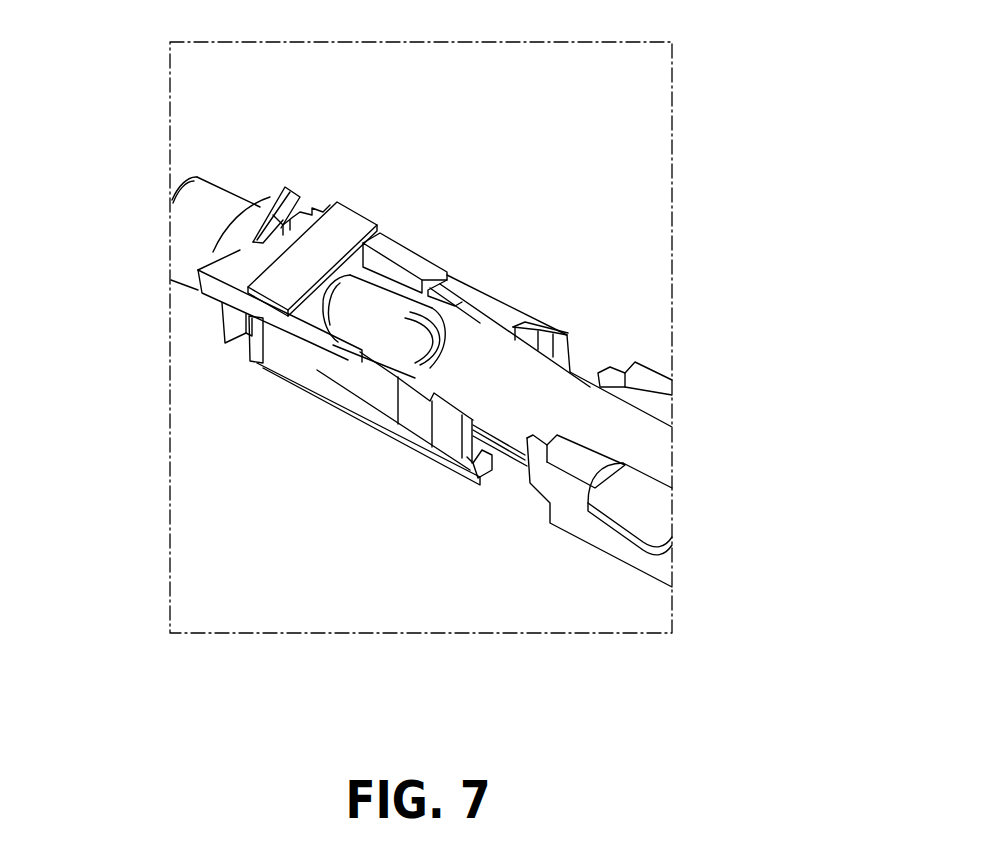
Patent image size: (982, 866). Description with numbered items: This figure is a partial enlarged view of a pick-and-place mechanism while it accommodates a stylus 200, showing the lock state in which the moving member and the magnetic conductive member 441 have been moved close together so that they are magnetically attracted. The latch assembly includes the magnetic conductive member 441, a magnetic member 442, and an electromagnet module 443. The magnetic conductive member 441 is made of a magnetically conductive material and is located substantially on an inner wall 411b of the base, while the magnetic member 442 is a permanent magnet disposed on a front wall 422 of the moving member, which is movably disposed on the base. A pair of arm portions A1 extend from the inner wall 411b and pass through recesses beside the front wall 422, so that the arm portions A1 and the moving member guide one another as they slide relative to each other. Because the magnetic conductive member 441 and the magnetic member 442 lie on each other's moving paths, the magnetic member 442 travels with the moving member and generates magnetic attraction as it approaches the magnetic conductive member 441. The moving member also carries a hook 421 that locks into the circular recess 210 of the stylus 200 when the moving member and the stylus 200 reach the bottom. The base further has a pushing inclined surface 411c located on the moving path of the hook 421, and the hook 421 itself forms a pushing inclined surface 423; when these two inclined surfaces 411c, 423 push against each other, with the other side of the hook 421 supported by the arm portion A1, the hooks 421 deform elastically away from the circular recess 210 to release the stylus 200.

The stylus 200 is at (647, 450).
The circular recess 210 is at (430, 343).
The inner wall 411b is at (212, 330).
The pushing inclined surface 411c is at (604, 356).
The hook 421 is at (453, 277).
The front wall 422 is at (335, 205).
The pushing inclined surface 423 is at (560, 357).
The magnetic conductive member 441 is at (260, 238).
The magnetic member 442 is at (273, 242).
The electromagnet module 443 is at (198, 193).
The arm portion A1 is at (413, 250).